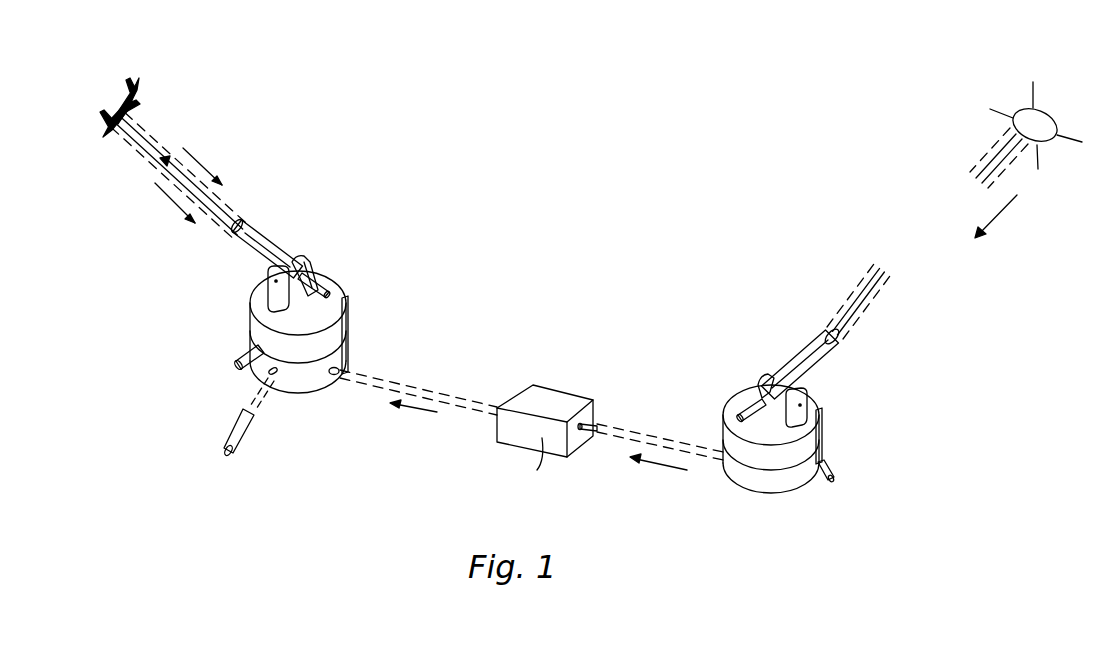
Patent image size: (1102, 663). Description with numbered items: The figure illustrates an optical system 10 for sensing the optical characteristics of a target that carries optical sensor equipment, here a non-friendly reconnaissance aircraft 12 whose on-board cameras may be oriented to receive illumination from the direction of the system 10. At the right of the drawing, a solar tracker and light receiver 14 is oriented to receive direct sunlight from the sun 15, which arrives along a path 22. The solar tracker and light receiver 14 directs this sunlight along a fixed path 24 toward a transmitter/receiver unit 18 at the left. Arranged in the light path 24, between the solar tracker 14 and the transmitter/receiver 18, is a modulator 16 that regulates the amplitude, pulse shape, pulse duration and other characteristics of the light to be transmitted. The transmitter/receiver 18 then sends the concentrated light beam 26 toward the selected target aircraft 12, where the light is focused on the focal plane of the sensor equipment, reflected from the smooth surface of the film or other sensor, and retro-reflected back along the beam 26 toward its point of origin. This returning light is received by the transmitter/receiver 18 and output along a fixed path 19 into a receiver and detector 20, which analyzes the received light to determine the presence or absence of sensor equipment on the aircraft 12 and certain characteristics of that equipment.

The system 10 is at (468, 150).
The aircraft 12 is at (102, 138).
The solar tracker and light receiver 14 is at (817, 438).
The sun 15 is at (1047, 110).
The modulator 16 is at (517, 443).
The transmitter/receiver unit 18 is at (347, 313).
The fixed path 19 is at (247, 400).
The receiver and detector 20 is at (247, 440).
The path 22 is at (860, 312).
The fixed path 24 is at (702, 450).
The light beam 26 is at (148, 140).